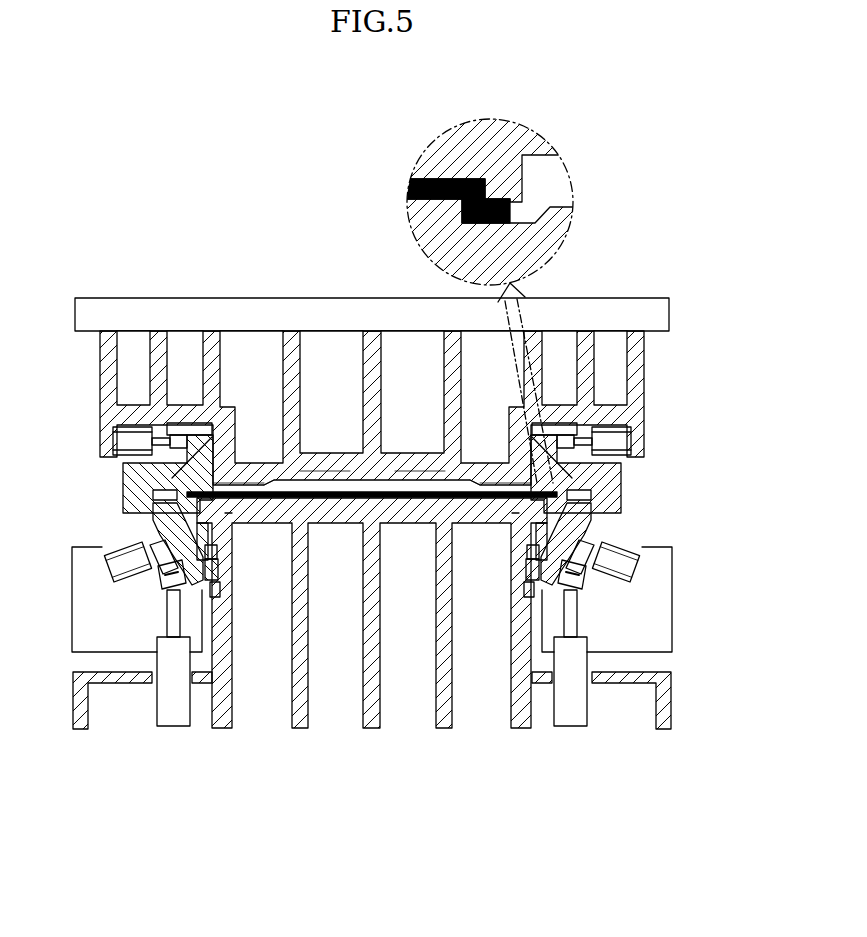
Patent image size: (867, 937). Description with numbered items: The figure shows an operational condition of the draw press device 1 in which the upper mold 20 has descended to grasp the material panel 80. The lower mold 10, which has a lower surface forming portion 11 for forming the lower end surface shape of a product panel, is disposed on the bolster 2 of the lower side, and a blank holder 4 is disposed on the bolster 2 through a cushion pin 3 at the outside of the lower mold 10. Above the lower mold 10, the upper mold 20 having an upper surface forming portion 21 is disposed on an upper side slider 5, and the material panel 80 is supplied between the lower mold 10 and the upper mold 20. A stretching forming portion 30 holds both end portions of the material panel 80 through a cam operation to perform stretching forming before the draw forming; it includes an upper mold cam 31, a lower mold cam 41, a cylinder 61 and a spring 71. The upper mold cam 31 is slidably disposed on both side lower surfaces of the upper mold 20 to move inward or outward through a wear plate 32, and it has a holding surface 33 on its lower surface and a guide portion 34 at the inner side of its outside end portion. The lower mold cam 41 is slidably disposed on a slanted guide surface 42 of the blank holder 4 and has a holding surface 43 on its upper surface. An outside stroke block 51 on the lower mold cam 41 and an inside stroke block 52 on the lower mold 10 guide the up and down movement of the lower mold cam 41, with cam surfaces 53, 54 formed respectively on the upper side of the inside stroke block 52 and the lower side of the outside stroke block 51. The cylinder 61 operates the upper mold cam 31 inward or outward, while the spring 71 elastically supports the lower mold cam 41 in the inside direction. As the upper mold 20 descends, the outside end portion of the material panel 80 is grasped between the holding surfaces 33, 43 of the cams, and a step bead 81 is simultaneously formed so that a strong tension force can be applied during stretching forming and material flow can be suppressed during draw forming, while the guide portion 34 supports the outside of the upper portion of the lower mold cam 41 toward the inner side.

The draw press device 1 is at (650, 290).
The bolster 2 is at (625, 684).
The cushion pin 3 is at (570, 612).
The blank holder 4 is at (83, 575).
The upper side slider 5 is at (663, 313).
The lower mold 10 is at (372, 730).
The lower surface forming portion 11 is at (291, 494).
The upper mold 20 is at (372, 348).
The upper surface forming portion 21 is at (440, 487).
The stretching forming portion 30 is at (107, 513).
The upper mold cam 31 is at (125, 468).
The wear plate 32 is at (192, 423).
The holding surface 33 is at (240, 487).
The guide portion 34 is at (124, 488).
The lower mold cam 41 is at (147, 523).
The slanted guide surface 42 is at (160, 588).
The holding surface 43 is at (245, 490).
The outside stroke block 51 is at (207, 533).
The inside stroke block 52 is at (216, 575).
The cam surface 53 is at (216, 560).
The cam surface 54 is at (218, 590).
The cylinder 61 is at (128, 442).
The spring 71 is at (130, 562).
The material panel 80 is at (333, 499).
The step bead 81 is at (485, 193).